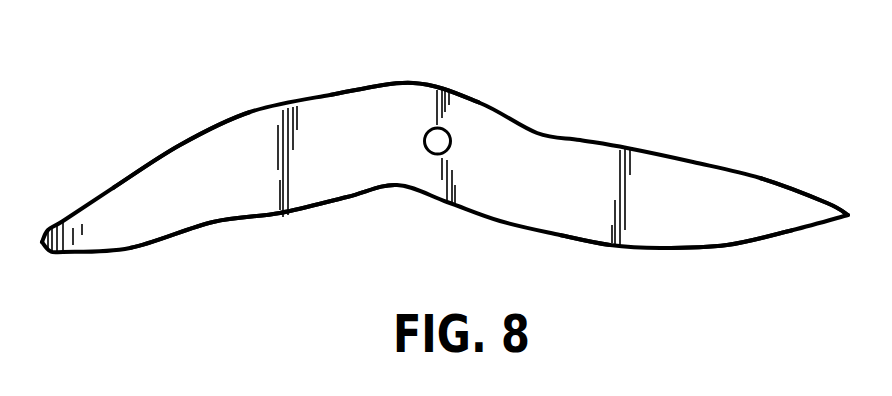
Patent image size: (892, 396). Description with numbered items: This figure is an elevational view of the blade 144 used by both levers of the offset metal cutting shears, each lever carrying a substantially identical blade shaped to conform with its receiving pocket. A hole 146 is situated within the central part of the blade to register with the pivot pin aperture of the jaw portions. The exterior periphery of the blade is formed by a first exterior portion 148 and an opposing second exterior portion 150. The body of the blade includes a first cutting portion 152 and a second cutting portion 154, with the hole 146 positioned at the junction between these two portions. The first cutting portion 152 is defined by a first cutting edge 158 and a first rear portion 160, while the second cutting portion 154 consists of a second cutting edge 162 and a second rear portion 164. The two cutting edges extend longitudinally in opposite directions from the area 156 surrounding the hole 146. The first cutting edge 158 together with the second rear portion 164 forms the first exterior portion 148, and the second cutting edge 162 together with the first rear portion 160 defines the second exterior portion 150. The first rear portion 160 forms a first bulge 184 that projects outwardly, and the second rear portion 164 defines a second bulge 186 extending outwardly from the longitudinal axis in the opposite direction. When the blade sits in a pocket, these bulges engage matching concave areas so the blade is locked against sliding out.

The blade 144 is at (393, 103).
The hole 146 is at (440, 137).
The first exterior portion 148 is at (320, 192).
The second exterior portion 150 is at (255, 127).
The first cutting portion 152 is at (213, 217).
The second cutting portion 154 is at (658, 172).
The area surrounding the hole 156 is at (432, 182).
The first cutting edge 158 is at (130, 250).
The first rear portion 160 is at (182, 148).
The second cutting edge 162 is at (762, 177).
The second rear portion 164 is at (590, 242).
The first bulge 184 is at (357, 112).
The second bulge 186 is at (692, 230).